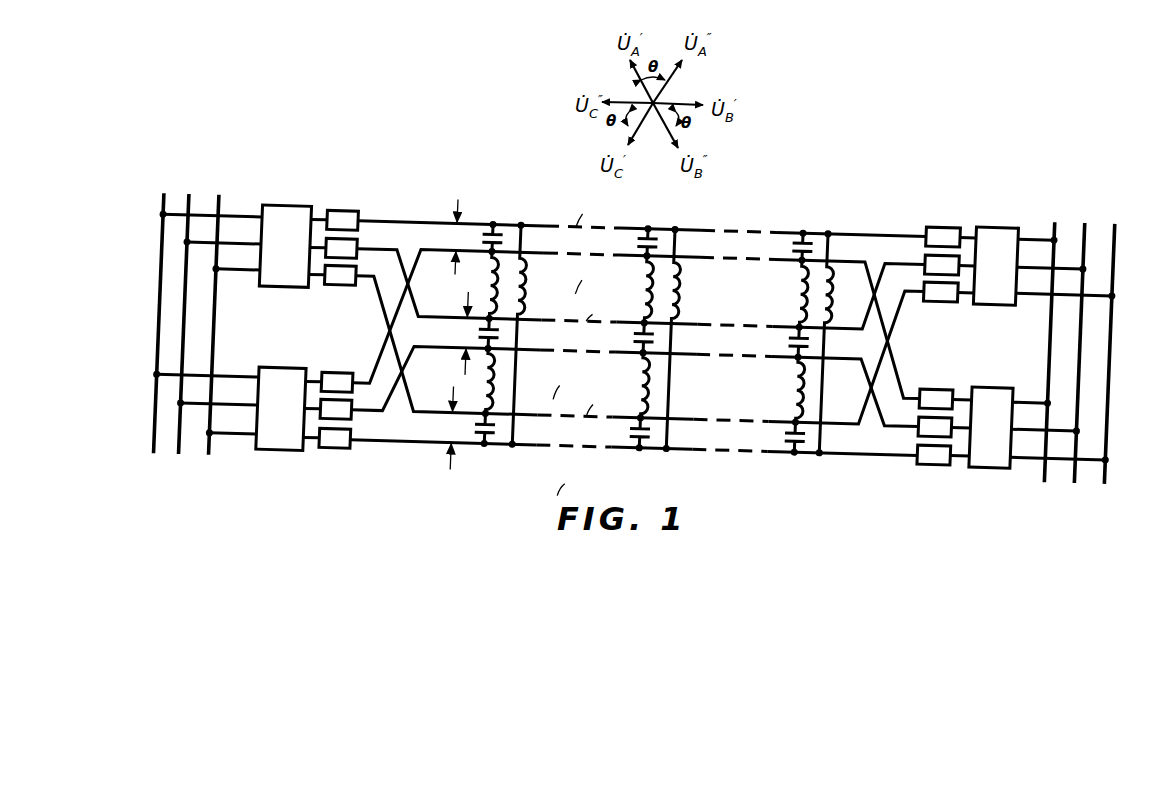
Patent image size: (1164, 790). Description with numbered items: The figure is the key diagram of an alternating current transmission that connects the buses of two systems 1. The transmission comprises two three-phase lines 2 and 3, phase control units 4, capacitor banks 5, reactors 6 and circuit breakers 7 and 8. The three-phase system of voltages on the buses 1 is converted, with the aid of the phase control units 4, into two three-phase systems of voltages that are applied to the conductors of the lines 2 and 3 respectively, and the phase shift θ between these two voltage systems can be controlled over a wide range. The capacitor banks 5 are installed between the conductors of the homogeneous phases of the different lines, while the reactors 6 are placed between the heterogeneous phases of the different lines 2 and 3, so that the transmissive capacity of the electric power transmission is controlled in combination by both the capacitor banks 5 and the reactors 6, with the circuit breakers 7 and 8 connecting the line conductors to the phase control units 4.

The buses of two systems 1 is at (214, 350).
The three-phase line 2 is at (410, 228).
The three-phase line 3 is at (841, 256).
The phase control unit 4 is at (634, 337).
The capacitor bank 5 is at (501, 337).
The reactor 6 is at (498, 291).
The circuit breaker 7 is at (358, 283).
The circuit breaker 8 is at (365, 428).